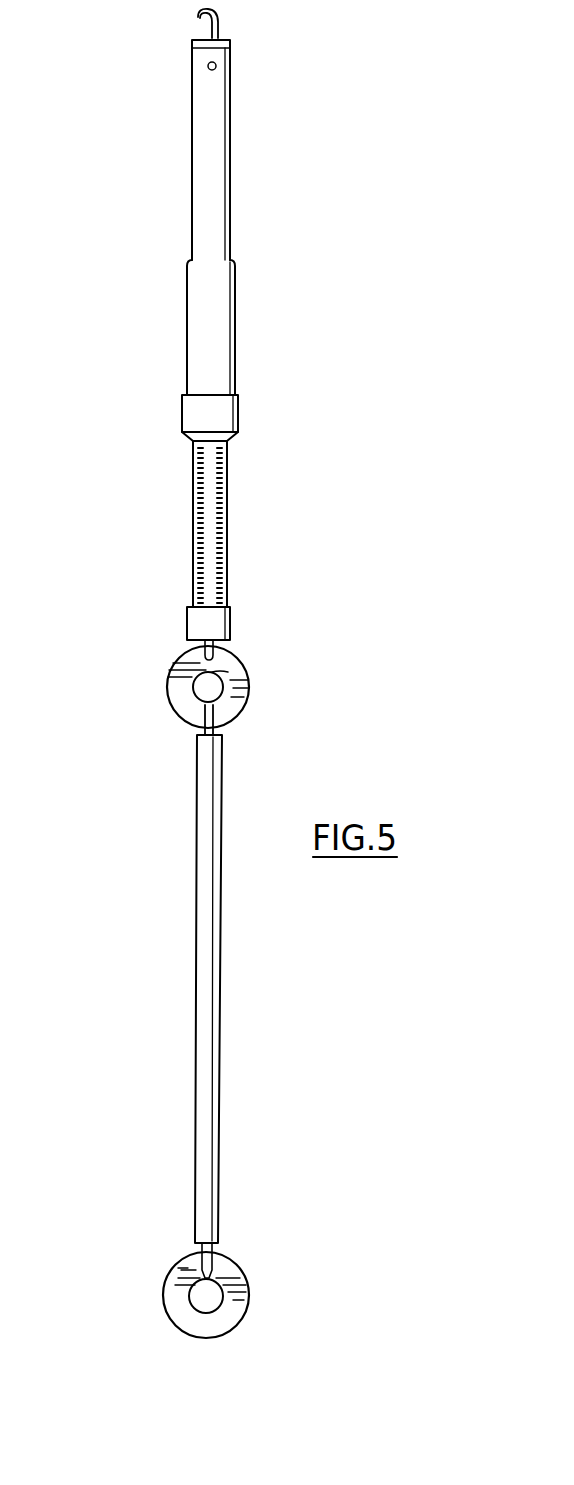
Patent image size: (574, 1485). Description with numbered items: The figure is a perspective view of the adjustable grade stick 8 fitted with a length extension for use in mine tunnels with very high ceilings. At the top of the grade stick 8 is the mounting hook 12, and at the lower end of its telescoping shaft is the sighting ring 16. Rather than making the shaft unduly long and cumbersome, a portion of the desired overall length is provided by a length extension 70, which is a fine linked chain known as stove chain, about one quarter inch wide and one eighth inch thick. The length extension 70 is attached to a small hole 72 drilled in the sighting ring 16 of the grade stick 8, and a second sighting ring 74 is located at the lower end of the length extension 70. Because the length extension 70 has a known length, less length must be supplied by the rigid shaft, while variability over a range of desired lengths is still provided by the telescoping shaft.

The adjustable grade stick 8 is at (158, 375).
The mounting hook 12 is at (220, 24).
The sighting ring 16 is at (167, 705).
The length extension 70 is at (222, 945).
The small hole 72 is at (214, 708).
The second sighting ring 74 is at (152, 1296).